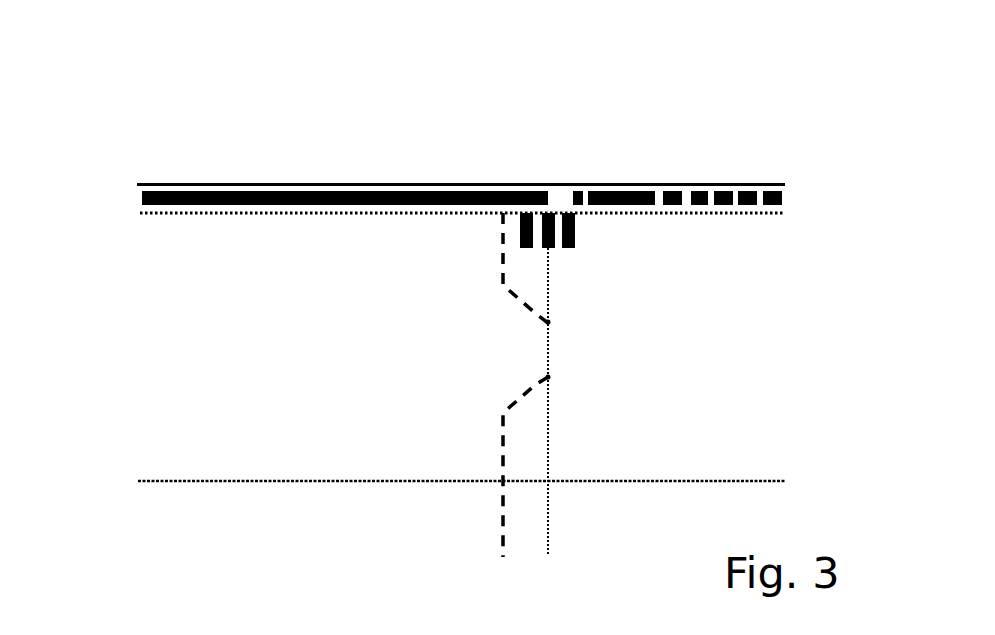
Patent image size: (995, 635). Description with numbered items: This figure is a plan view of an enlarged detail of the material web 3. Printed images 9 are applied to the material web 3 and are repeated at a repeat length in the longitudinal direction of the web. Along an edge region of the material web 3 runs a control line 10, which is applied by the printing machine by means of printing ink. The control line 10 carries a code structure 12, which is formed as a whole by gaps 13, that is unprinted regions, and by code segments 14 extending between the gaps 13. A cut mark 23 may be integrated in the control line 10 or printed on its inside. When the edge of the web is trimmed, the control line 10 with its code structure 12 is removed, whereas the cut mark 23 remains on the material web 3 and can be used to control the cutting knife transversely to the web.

The material web 3 is at (136, 129).
The printed image 9 is at (327, 387).
The control line 10 is at (385, 190).
The code structure 12 is at (694, 156).
The gap 13 is at (546, 167).
The code segment 14 is at (719, 222).
The cut mark 23 is at (602, 255).